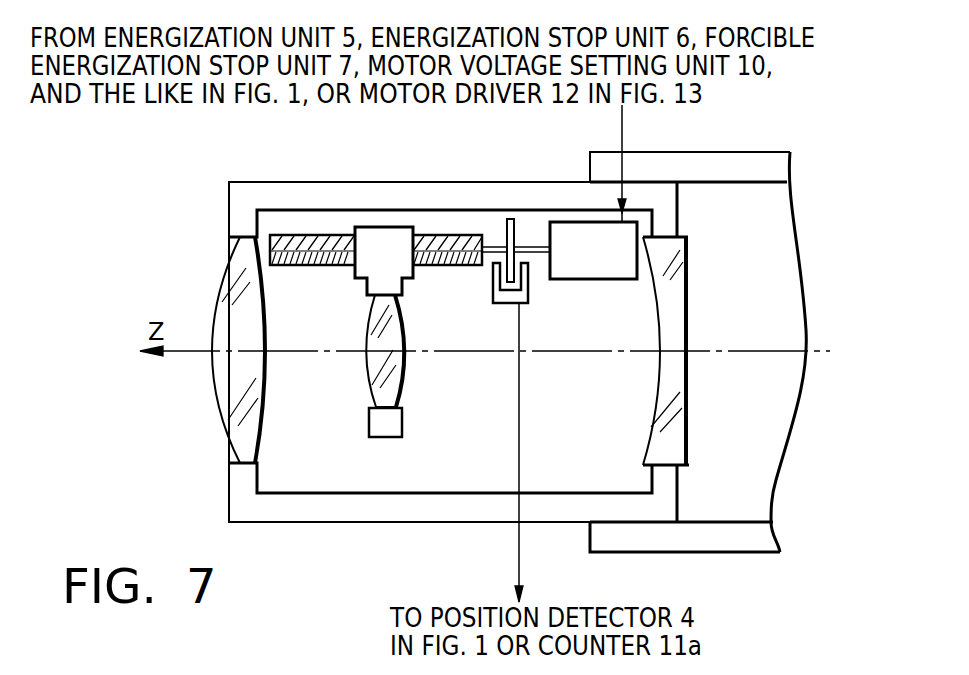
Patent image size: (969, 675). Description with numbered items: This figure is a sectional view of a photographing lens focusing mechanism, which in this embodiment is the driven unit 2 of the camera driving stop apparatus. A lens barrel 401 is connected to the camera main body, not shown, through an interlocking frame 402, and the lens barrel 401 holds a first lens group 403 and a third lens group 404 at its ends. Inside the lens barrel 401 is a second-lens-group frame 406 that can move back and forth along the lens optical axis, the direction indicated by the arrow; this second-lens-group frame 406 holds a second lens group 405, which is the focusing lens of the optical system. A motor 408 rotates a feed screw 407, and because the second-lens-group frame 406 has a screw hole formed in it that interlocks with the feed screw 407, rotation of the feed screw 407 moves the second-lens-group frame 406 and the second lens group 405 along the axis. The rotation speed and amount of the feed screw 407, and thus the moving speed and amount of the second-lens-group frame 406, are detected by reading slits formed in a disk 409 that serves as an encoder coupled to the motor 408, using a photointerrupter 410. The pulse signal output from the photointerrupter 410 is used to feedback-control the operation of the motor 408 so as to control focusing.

The driven unit 2 is at (365, 541).
The lens barrel 401 is at (370, 182).
The interlocking frame 402 is at (734, 160).
The first lens group 403 is at (212, 395).
The third lens group 404 is at (686, 301).
The second lens group 405 is at (365, 365).
The second-lens-group frame 406 is at (402, 420).
The feed screw 407 is at (300, 266).
The motor 408 is at (616, 278).
The disk 409 is at (510, 219).
The photointerrupter 410 is at (528, 293).